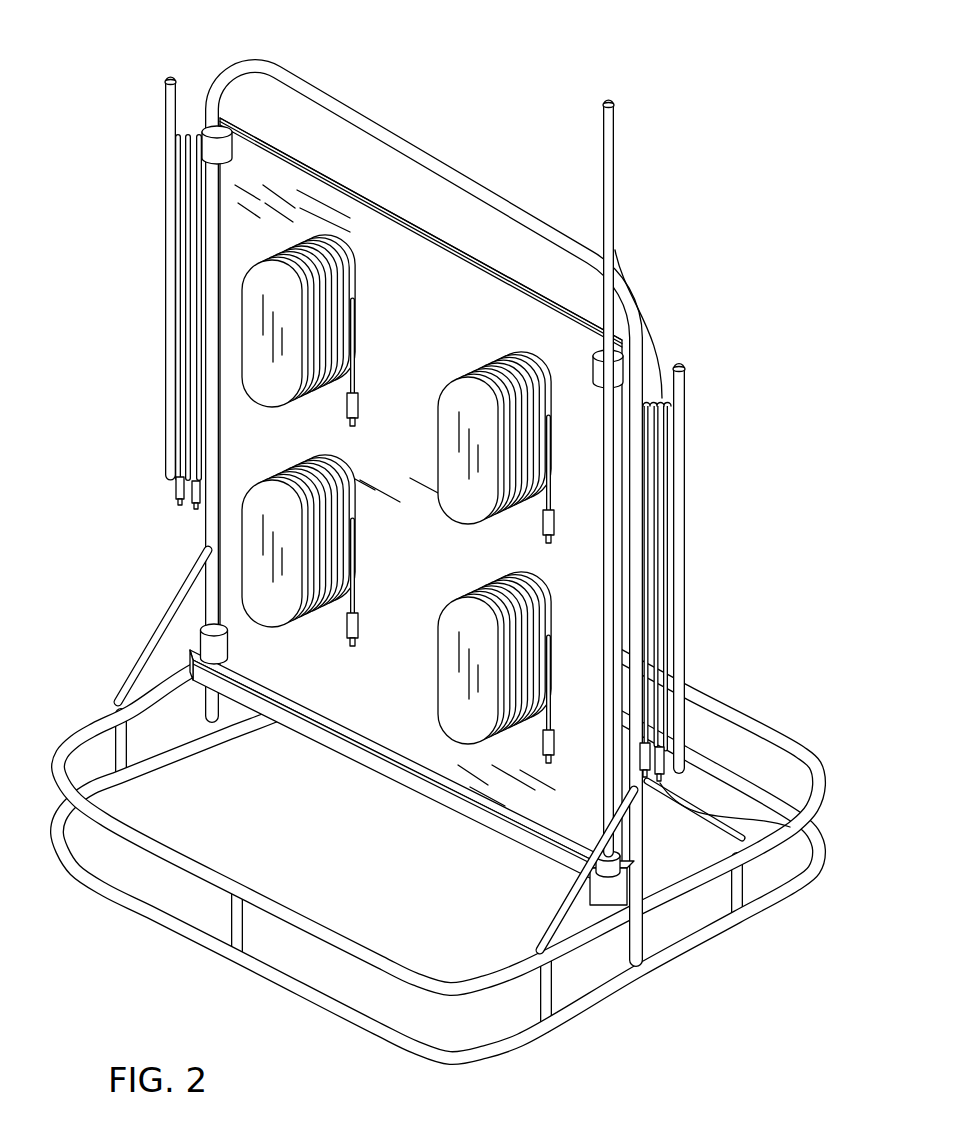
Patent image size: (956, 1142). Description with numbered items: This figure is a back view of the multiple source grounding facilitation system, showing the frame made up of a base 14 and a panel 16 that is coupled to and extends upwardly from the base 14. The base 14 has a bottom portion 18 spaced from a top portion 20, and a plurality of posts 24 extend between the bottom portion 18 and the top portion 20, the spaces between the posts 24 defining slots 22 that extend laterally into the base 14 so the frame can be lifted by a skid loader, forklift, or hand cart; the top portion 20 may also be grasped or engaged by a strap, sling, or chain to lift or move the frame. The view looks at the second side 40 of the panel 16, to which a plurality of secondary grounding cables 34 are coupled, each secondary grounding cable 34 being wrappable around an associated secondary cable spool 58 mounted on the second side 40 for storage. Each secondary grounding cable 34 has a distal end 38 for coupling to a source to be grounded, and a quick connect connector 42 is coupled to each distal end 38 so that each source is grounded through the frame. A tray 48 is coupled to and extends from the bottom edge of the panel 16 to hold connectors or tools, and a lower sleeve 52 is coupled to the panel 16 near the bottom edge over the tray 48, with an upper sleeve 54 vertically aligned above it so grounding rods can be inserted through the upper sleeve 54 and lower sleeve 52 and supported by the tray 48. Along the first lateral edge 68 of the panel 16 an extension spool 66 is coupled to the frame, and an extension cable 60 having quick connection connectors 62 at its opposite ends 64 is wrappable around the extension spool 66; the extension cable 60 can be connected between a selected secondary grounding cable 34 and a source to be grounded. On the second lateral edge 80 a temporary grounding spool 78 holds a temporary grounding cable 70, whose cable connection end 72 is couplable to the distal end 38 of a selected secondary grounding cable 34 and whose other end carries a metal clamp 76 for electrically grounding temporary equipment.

The base 14 is at (438, 555).
The panel 16 is at (492, 300).
The bottom portion 18 is at (100, 878).
The top portion 20 is at (127, 827).
The slots 22 is at (438, 814).
The posts 24 is at (240, 922).
The secondary grounding cables 34 is at (356, 307).
The distal end 38 is at (356, 380).
The second side 40 is at (407, 253).
The quick connect connector 42 is at (357, 423).
The tray 48 is at (294, 722).
The lower sleeve 52 is at (211, 636).
The upper sleeve 54 is at (229, 140).
The secondary cable spools 58 is at (264, 369).
The extension cable 60 is at (648, 398).
The quick connection connectors 62 is at (646, 785).
The opposite ends 64 is at (663, 750).
The extension spool 66 is at (683, 520).
The first lateral edge 68 is at (637, 565).
The temporary grounding cable 70 is at (193, 130).
The cable connection end 72 is at (178, 492).
The metal clamp 76 is at (195, 526).
The temporary grounding spool 78 is at (172, 312).
The second lateral edge 80 is at (206, 370).